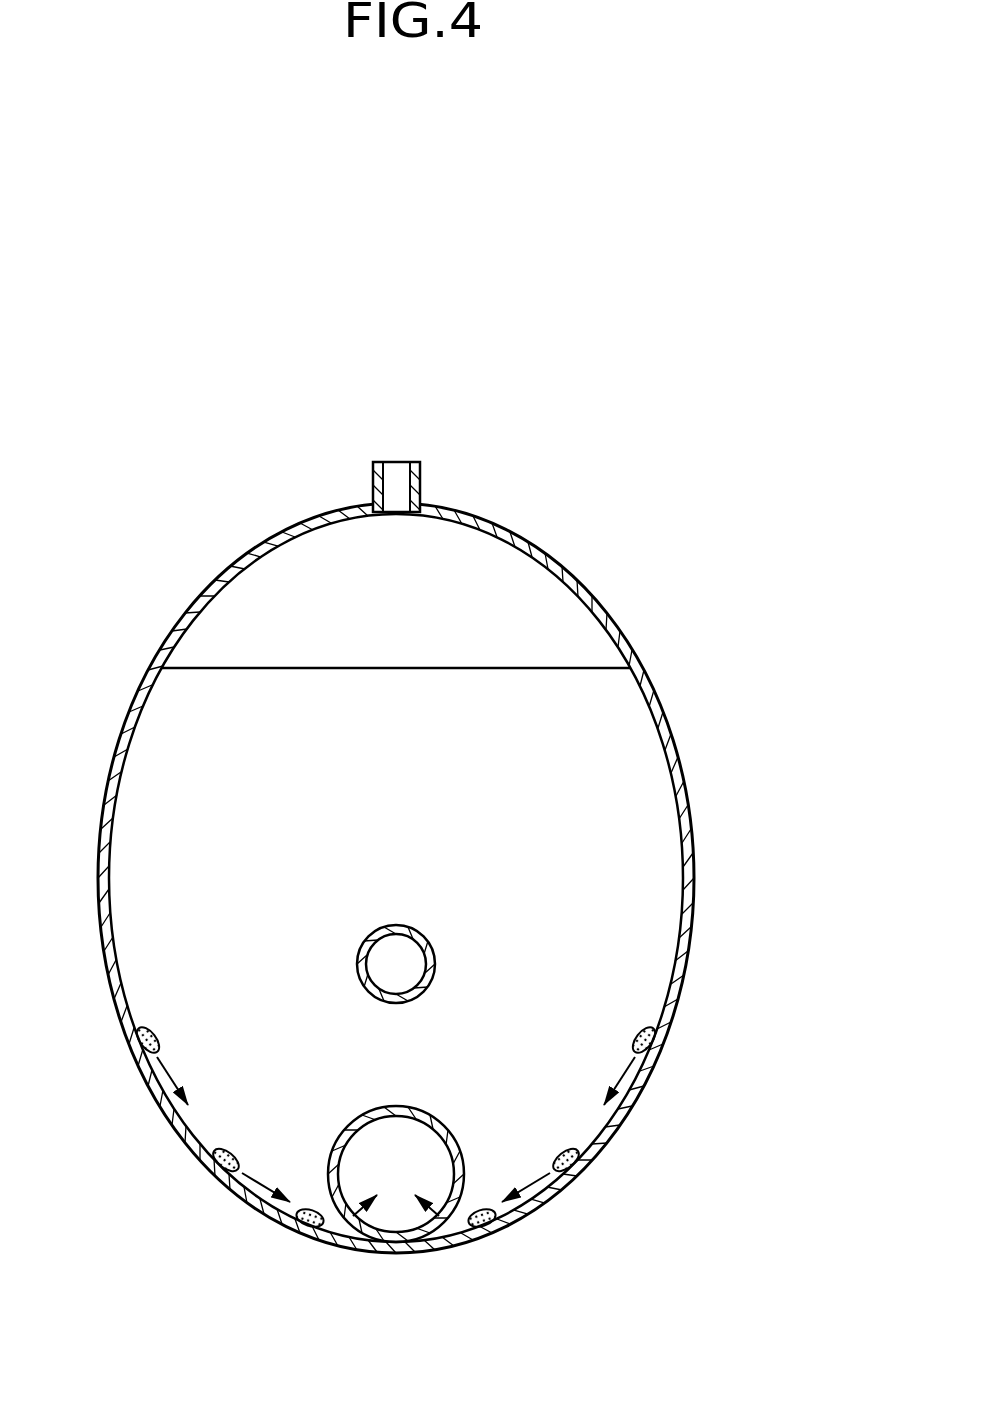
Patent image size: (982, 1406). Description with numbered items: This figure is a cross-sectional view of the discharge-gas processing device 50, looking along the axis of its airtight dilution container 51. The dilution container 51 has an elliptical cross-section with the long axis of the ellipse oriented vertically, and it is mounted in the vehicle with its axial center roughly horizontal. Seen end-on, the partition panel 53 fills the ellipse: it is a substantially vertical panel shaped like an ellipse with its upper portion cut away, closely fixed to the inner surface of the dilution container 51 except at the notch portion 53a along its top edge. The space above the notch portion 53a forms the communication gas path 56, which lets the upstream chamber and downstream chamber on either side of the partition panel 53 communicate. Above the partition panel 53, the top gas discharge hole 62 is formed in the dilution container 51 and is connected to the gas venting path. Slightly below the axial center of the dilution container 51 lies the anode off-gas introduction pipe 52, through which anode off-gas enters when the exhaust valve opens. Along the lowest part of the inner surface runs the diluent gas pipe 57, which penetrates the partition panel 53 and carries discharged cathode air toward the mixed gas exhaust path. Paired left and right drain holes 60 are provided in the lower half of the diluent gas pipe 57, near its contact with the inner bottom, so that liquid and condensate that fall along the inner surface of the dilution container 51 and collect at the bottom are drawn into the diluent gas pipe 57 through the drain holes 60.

The discharge-gas processing device 50 is at (497, 427).
The dilution container 51 is at (695, 856).
The anode off-gas introduction pipe 52 is at (435, 950).
The partition panel 53 is at (613, 745).
The notch portion 53a is at (575, 668).
The communication gas path 56 is at (475, 562).
The diluent gas pipe 57 is at (443, 1123).
The drain holes 60 is at (360, 1232).
The top gas discharge hole 62 is at (397, 462).